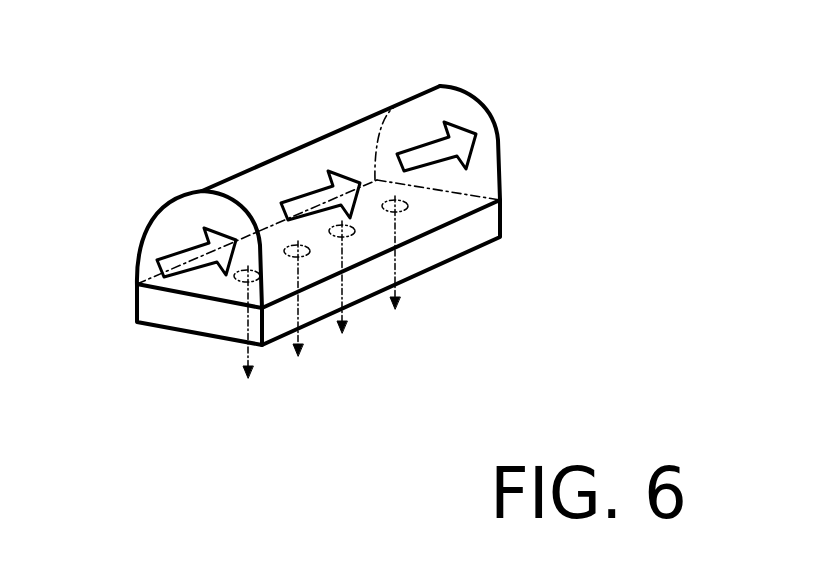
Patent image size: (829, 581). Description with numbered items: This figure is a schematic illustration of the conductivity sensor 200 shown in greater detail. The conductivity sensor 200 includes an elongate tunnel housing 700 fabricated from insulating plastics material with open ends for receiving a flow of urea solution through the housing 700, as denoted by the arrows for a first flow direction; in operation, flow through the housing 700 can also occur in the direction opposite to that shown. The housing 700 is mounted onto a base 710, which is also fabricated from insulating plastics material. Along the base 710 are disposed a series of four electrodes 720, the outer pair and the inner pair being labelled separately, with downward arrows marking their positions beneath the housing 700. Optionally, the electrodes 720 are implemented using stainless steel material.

The conductivity sensor 200 is at (200, 92).
The elongate tunnel housing 700 is at (365, 119).
The base 710 is at (193, 312).
The electrodes 720 is at (401, 209).